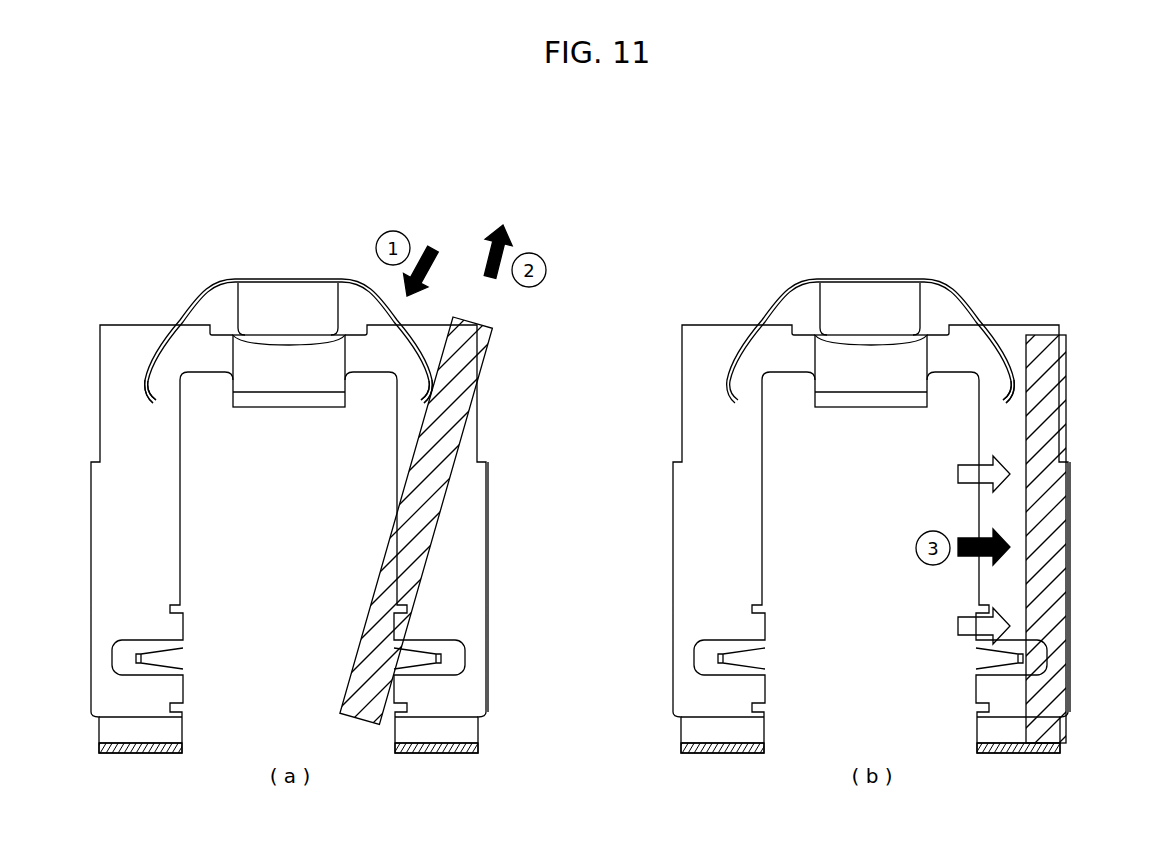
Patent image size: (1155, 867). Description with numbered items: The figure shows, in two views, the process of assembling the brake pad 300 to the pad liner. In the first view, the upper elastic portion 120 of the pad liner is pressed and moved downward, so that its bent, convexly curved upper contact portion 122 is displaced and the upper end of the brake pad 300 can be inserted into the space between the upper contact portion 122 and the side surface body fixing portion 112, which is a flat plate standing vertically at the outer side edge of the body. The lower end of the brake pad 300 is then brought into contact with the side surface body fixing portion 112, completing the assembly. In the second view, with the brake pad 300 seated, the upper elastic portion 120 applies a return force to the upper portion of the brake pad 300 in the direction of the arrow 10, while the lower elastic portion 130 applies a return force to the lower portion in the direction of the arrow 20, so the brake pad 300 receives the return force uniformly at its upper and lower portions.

The arrow 10 is at (957, 472).
The arrow 20 is at (957, 624).
The side surface body fixing portion 112 is at (490, 482).
The upper elastic portion 120 is at (417, 344).
The upper contact portion 122 is at (432, 386).
The lower elastic portion 130 is at (1012, 654).
The brake pad 300 is at (468, 368).